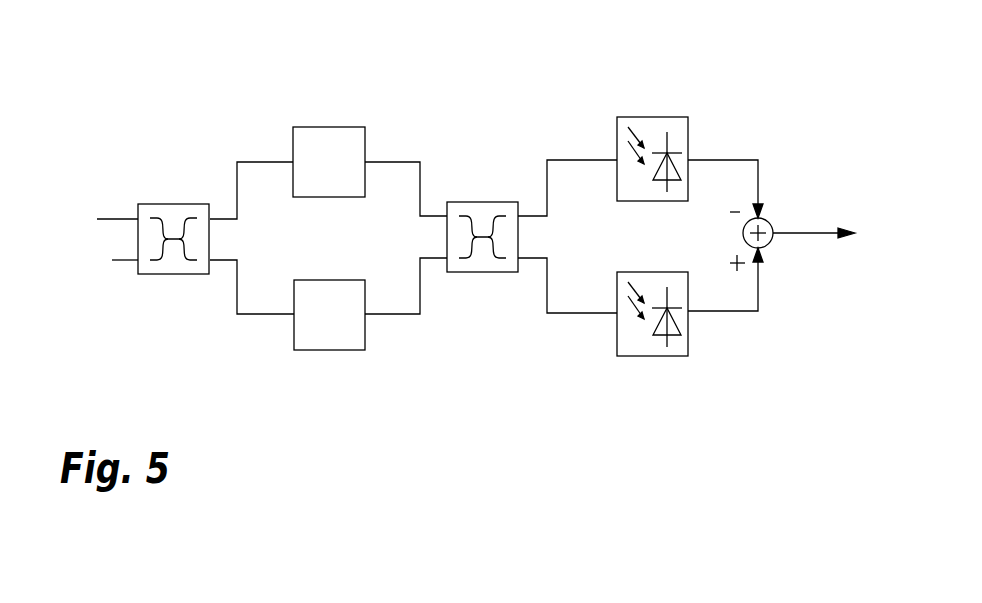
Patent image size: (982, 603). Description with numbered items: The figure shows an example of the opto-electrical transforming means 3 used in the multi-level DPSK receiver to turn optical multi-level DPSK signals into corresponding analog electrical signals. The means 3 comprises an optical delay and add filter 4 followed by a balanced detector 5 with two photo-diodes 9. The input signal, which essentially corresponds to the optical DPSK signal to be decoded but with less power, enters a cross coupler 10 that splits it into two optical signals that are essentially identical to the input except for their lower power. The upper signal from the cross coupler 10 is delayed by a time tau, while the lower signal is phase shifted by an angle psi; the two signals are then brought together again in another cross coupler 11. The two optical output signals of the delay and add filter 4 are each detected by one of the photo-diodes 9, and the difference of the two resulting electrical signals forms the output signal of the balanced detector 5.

The opto-electrical transforming means 3 is at (483, 115).
The optical delay and add filter 4 is at (532, 390).
The balanced detector 5 is at (785, 390).
The photo-diode 9 is at (651, 117).
The cross coupler 10 is at (176, 274).
The cross coupler 11 is at (483, 271).